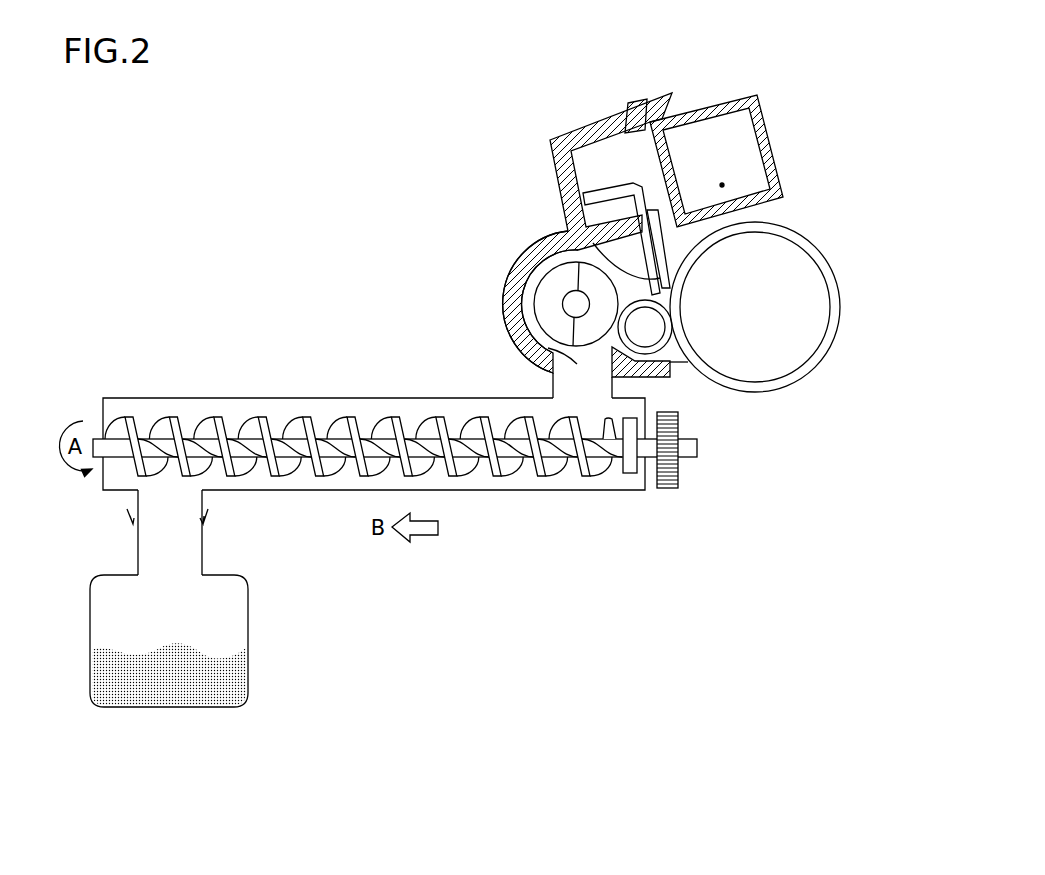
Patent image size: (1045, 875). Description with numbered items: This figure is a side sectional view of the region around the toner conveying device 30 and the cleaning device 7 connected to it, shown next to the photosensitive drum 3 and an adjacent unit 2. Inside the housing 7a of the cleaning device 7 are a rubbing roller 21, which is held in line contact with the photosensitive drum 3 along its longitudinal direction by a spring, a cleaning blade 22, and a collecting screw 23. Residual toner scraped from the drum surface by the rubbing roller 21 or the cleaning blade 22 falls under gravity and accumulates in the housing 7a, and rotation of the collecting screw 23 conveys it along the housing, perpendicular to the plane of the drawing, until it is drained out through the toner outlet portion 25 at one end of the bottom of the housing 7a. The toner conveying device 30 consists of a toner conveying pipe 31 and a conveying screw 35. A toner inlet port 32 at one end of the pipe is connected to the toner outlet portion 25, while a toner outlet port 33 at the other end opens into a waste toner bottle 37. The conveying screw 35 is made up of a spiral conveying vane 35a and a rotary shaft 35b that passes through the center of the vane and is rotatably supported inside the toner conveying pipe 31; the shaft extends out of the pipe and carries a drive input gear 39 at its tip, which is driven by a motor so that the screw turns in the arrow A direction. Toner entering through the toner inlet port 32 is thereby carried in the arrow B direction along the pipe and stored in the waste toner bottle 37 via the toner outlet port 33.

The toner container / developing unit casing 2 is at (768, 142).
The photosensitive drum 3 is at (822, 258).
The cleaning device 7 is at (509, 170).
The housing 7a is at (510, 292).
The rubbing roller 21 is at (660, 352).
The cleaning blade 22 is at (582, 223).
The collecting screw 23 is at (545, 273).
The toner outlet portion 25 is at (548, 350).
The toner conveying device 30 is at (344, 368).
The toner conveying pipe 31 is at (238, 398).
The toner inlet port 32 is at (568, 385).
The toner outlet port 33 is at (183, 505).
The conveying screw 35 is at (395, 518).
The conveying vane 35a is at (556, 460).
The rotary shaft 35b is at (527, 462).
The waste toner bottle 37 is at (248, 630).
The drive input gear 39 is at (670, 490).